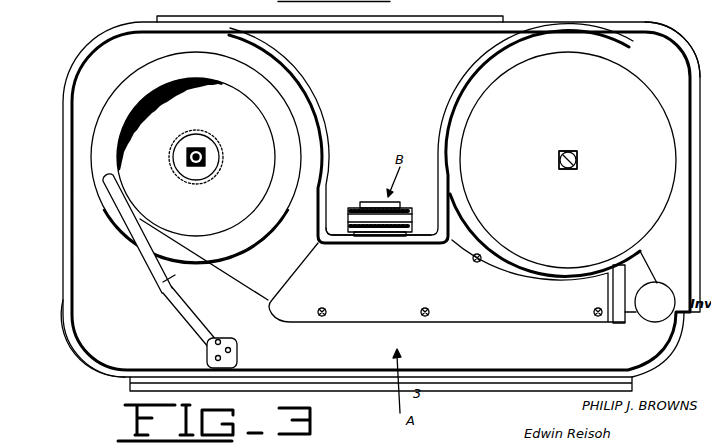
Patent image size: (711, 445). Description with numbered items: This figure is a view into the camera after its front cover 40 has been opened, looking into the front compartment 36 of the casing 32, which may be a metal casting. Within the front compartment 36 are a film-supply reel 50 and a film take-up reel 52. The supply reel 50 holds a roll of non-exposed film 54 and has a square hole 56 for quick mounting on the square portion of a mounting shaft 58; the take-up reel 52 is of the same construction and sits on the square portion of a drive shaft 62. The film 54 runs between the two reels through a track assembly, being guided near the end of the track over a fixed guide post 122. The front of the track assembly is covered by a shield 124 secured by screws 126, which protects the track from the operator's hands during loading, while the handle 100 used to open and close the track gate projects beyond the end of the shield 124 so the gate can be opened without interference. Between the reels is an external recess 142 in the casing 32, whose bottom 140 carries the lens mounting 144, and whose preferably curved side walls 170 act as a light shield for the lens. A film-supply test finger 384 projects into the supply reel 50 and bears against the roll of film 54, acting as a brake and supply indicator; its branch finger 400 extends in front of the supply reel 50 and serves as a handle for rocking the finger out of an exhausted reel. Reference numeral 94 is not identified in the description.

The casing 32 is at (63, 193).
The front compartment 36 is at (92, 322).
The cover 40 is at (375, 388).
The film-supply reel 50 is at (273, 97).
The film take-up reel 52 is at (645, 107).
The film 54 is at (233, 275).
The square hole 56 is at (207, 160).
The mounting shaft 58 is at (196, 166).
The drive shaft 62 is at (577, 160).
The housing top corner 94 is at (655, 55).
The handle 100 is at (625, 278).
The guide post 122 is at (658, 322).
The shield 124 is at (492, 322).
The screws 126 is at (322, 317).
The bottom of external recess 140 is at (332, 241).
The external recess 142 is at (437, 77).
The lens mounting 144 is at (407, 209).
The side walls of recess 170 is at (323, 138).
The film-supply test finger 384 is at (196, 309).
The branch finger 400 is at (163, 291).